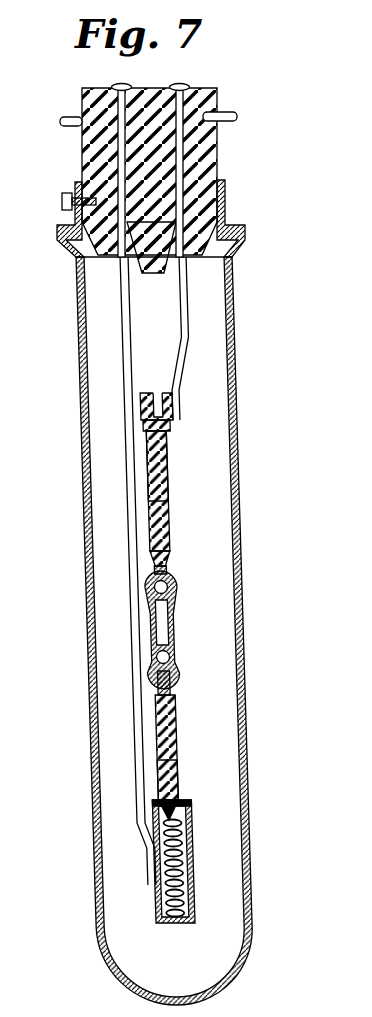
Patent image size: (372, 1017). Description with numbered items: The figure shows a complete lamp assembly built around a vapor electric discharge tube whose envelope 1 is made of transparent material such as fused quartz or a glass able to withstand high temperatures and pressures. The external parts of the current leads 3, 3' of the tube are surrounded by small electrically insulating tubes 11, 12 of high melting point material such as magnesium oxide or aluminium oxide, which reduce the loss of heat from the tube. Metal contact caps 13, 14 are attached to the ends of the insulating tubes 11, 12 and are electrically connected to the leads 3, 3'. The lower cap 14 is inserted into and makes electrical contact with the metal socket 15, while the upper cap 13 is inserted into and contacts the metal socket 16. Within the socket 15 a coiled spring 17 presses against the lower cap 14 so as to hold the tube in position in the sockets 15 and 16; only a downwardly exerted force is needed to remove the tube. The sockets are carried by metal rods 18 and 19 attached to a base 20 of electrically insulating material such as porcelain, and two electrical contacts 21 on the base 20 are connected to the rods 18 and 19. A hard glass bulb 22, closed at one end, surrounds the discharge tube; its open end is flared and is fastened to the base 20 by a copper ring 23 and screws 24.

The envelope 1 is at (178, 615).
The leading-in conductor 3 is at (221, 498).
The leading-in conductor 3' is at (216, 746).
The electrically insulating tube 11 is at (167, 475).
The electrically insulating tube 12 is at (178, 765).
The metal contact cap 13 is at (172, 436).
The metal contact cap 14 is at (178, 797).
The metal socket 15 is at (187, 827).
The metal socket 16 is at (140, 405).
The coiled spring 17 is at (182, 855).
The metal rod 18 is at (124, 446).
The metal rod 19 is at (187, 315).
The base 20 is at (217, 148).
The electrical contacts 21 is at (178, 86).
The hard glass bulb 22 is at (241, 595).
The copper ring 23 is at (226, 194).
The screws 24 is at (62, 199).